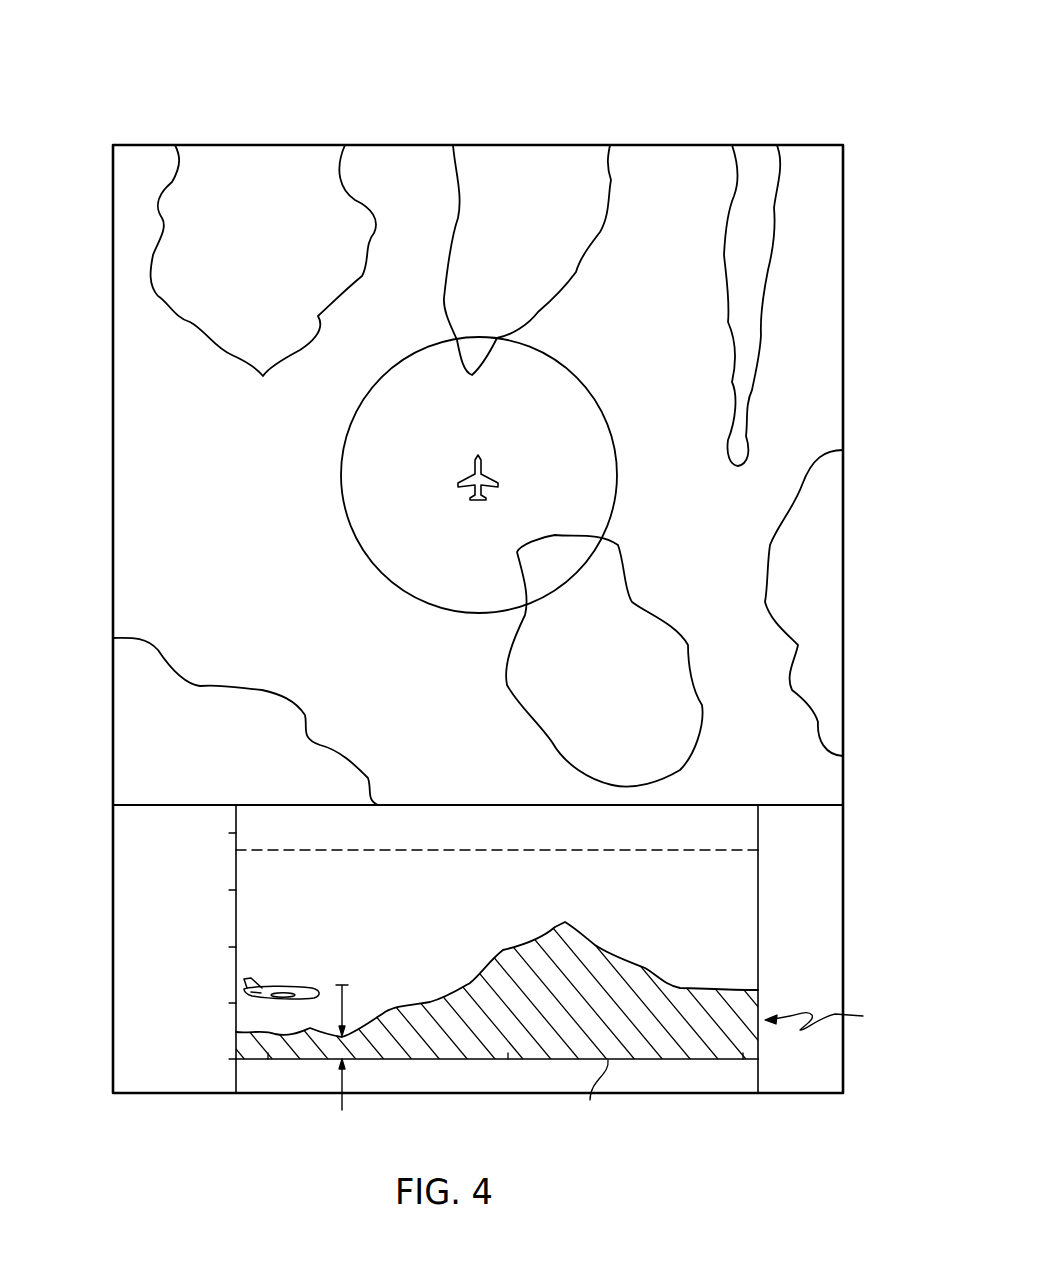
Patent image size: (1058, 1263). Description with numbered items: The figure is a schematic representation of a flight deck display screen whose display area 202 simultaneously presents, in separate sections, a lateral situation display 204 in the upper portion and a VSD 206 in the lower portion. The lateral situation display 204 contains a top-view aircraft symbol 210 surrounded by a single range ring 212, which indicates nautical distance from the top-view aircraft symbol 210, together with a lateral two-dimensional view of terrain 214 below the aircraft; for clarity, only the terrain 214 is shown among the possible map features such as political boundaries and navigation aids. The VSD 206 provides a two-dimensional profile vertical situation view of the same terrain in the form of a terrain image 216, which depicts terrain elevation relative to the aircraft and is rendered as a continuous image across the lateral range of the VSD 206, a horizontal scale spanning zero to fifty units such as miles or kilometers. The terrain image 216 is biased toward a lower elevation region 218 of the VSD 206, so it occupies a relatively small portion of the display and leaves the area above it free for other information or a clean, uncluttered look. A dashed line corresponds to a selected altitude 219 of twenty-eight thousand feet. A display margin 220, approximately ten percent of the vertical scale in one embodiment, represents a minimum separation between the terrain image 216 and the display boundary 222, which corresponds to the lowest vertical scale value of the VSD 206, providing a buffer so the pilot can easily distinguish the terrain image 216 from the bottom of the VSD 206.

The display area 202 is at (638, 128).
The lateral situation display 204 is at (113, 412).
The VSD 206 is at (113, 940).
The top-view aircraft symbol 210 is at (470, 477).
The range ring 212 is at (619, 475).
The terrain 214 is at (322, 316).
The terrain image 216 is at (580, 934).
The lower elevation region 218 is at (834, 1018).
The selected altitude 219 is at (402, 851).
The display margin 220 is at (345, 993).
The display boundary 222 is at (589, 1095).